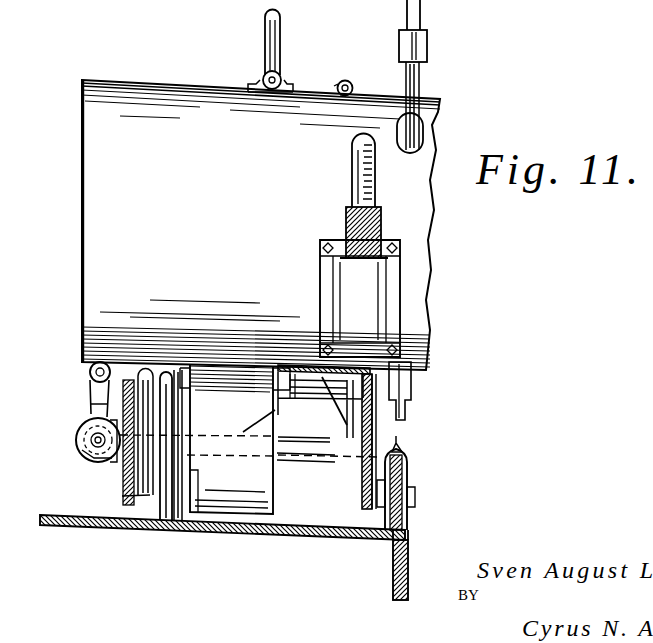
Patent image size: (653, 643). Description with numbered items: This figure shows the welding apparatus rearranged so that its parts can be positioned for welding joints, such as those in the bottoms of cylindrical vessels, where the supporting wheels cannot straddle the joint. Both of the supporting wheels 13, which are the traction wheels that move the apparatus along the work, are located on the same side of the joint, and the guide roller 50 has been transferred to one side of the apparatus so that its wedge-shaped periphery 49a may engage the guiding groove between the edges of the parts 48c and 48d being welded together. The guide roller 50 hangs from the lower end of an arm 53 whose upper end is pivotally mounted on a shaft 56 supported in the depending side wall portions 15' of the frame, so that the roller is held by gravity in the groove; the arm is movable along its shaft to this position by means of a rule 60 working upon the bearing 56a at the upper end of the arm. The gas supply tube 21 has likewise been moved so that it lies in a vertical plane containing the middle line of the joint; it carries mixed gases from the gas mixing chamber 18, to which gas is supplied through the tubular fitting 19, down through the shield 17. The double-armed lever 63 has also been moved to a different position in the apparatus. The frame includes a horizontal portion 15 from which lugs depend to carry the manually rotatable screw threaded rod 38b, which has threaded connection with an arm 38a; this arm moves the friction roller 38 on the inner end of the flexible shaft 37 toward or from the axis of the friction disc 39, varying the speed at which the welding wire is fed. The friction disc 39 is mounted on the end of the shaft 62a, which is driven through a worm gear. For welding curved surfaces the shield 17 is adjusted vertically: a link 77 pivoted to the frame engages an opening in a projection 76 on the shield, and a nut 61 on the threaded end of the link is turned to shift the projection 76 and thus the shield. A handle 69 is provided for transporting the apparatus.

The shield 17 is at (188, 112).
The handle 69 is at (266, 31).
The link 77 is at (352, 80).
The nut 61 is at (338, 82).
The projection 76 is at (343, 97).
The tubular fitting 19 is at (421, 16).
The gas mixing chamber 18 is at (428, 46).
The tube 21 is at (420, 82).
The double-armed lever 63 is at (376, 228).
The horizontal portion of the frame 15 is at (334, 307).
The supporting wheels 13 is at (146, 510).
The metal part 48d is at (394, 575).
The metal part 48c is at (360, 542).
The guiding roller 50 is at (408, 505).
The wedge-shaped periphery 49a is at (403, 452).
The depending side wall portions of the frame 15' is at (266, 441).
The arm 53 is at (340, 408).
The bearing 56a is at (308, 385).
The rule 60 is at (205, 439).
The shaft 62a is at (184, 427).
The shaft 56 is at (182, 382).
The screw threaded rod 38b is at (89, 378).
The arm 38a is at (91, 404).
The friction roller 38 is at (76, 440).
The flexible shaft 37 is at (86, 455).
The friction disc 39 is at (122, 497).